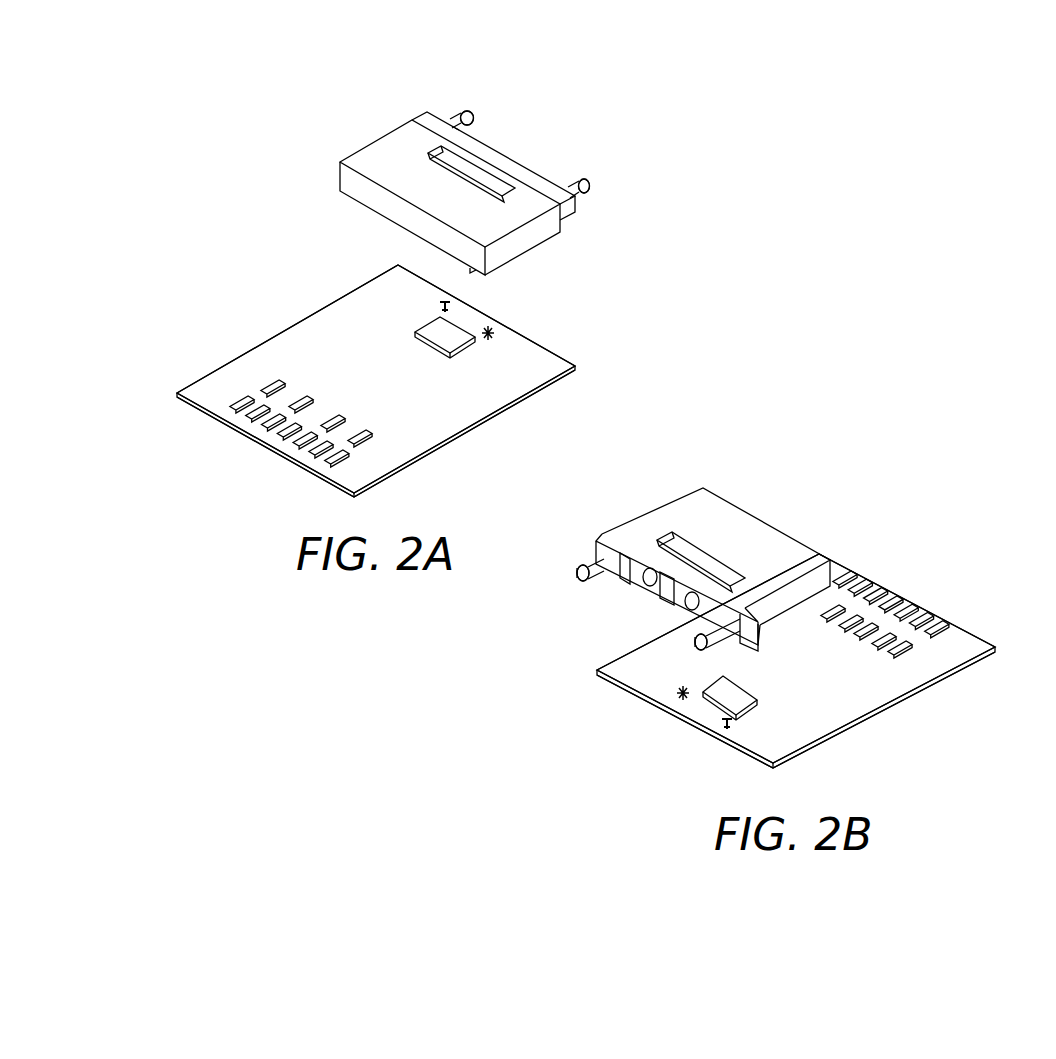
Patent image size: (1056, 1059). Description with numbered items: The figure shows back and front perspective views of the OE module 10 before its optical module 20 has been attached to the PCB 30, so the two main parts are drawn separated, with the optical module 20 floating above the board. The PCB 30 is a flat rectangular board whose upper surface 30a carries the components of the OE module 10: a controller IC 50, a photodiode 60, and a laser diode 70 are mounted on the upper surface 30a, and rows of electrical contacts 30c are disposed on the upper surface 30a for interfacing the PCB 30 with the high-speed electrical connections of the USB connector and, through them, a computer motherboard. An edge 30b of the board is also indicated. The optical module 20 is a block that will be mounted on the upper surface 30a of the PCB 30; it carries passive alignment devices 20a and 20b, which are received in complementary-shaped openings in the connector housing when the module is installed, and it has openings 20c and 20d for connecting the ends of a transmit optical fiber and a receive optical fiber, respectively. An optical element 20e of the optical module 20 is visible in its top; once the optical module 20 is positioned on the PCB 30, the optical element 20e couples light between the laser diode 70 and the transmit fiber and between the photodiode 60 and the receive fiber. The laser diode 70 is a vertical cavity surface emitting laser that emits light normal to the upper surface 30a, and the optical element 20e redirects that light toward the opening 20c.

In FIG. 2A, the OE module 10 is at (226, 147).
In FIG. 2B, the OE module 10 is at (898, 446).
In FIG. 2A, the optical module 20 is at (395, 155).
In FIG. 2B, the optical module 20 is at (695, 525).
In FIG. 2A, the passive alignment device 20a is at (466, 114).
In FIG. 2B, the passive alignment device 20a is at (704, 636).
In FIG. 2A, the passive alignment device 20b is at (583, 179).
In FIG. 2B, the passive alignment device 20b is at (583, 568).
In FIG. 2B, the opening 20c is at (647, 582).
In FIG. 2B, the opening 20d is at (688, 602).
In FIG. 2A, the optical element 20e is at (478, 165).
In FIG. 2B, the optical element 20e is at (726, 563).
In FIG. 2A, the PCB 30 is at (303, 318).
In FIG. 2B, the PCB 30 is at (895, 707).
In FIG. 2A, the upper surface 30a is at (384, 305).
In FIG. 2B, the upper surface 30a is at (633, 667).
In FIG. 2A, the board edge 30b is at (398, 485).
In FIG. 2B, the board edge 30b is at (823, 760).
In FIG. 2A, the electrical contacts 30c is at (292, 440).
In FIG. 2B, the electrical contacts 30c is at (888, 602).
In FIG. 2A, the controller IC 50 is at (447, 333).
In FIG. 2B, the controller IC 50 is at (715, 690).
In FIG. 2A, the photodiode 60 is at (452, 308).
In FIG. 2B, the photodiode 60 is at (728, 728).
In FIG. 2A, the laser diode 70 is at (497, 333).
In FIG. 2B, the laser diode 70 is at (680, 692).